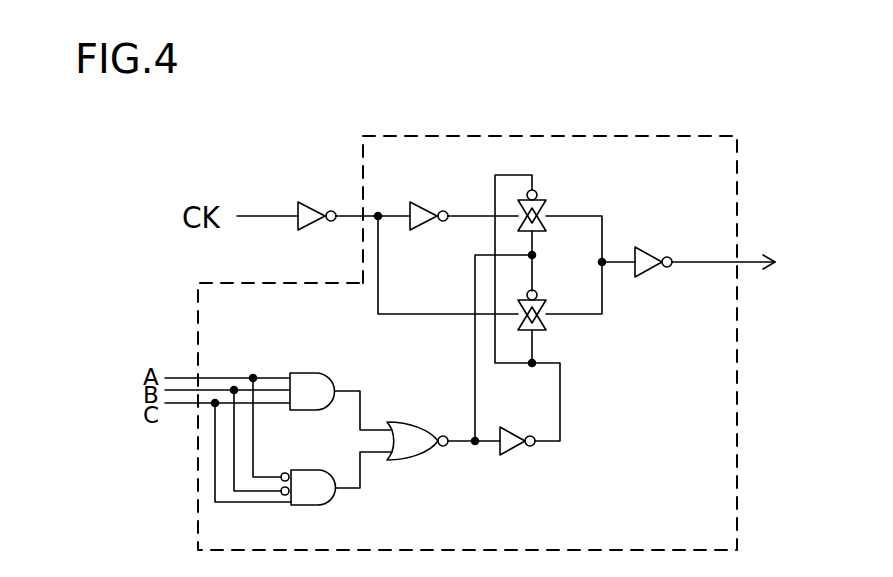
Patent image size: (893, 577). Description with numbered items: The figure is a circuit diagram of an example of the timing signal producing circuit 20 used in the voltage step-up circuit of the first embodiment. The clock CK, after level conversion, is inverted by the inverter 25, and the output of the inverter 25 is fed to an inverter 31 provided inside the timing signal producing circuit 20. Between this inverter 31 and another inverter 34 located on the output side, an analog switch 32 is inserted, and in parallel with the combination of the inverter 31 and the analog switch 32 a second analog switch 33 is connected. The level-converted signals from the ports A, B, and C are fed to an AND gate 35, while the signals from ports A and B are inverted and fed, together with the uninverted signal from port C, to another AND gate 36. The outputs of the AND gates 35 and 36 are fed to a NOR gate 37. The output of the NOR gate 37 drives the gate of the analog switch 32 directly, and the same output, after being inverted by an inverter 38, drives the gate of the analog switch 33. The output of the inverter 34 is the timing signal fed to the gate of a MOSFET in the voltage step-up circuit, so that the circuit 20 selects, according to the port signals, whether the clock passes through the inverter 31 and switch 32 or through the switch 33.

The timing signal producing circuit 20 is at (693, 148).
The inverter 25 is at (310, 200).
The inverter 31 is at (428, 200).
The analog switch 32 is at (538, 197).
The analog switch 33 is at (538, 299).
The inverter 34 is at (652, 247).
The AND gate 35 is at (308, 372).
The AND gate 36 is at (310, 506).
The NOR gate 37 is at (415, 460).
The inverter 38 is at (520, 447).